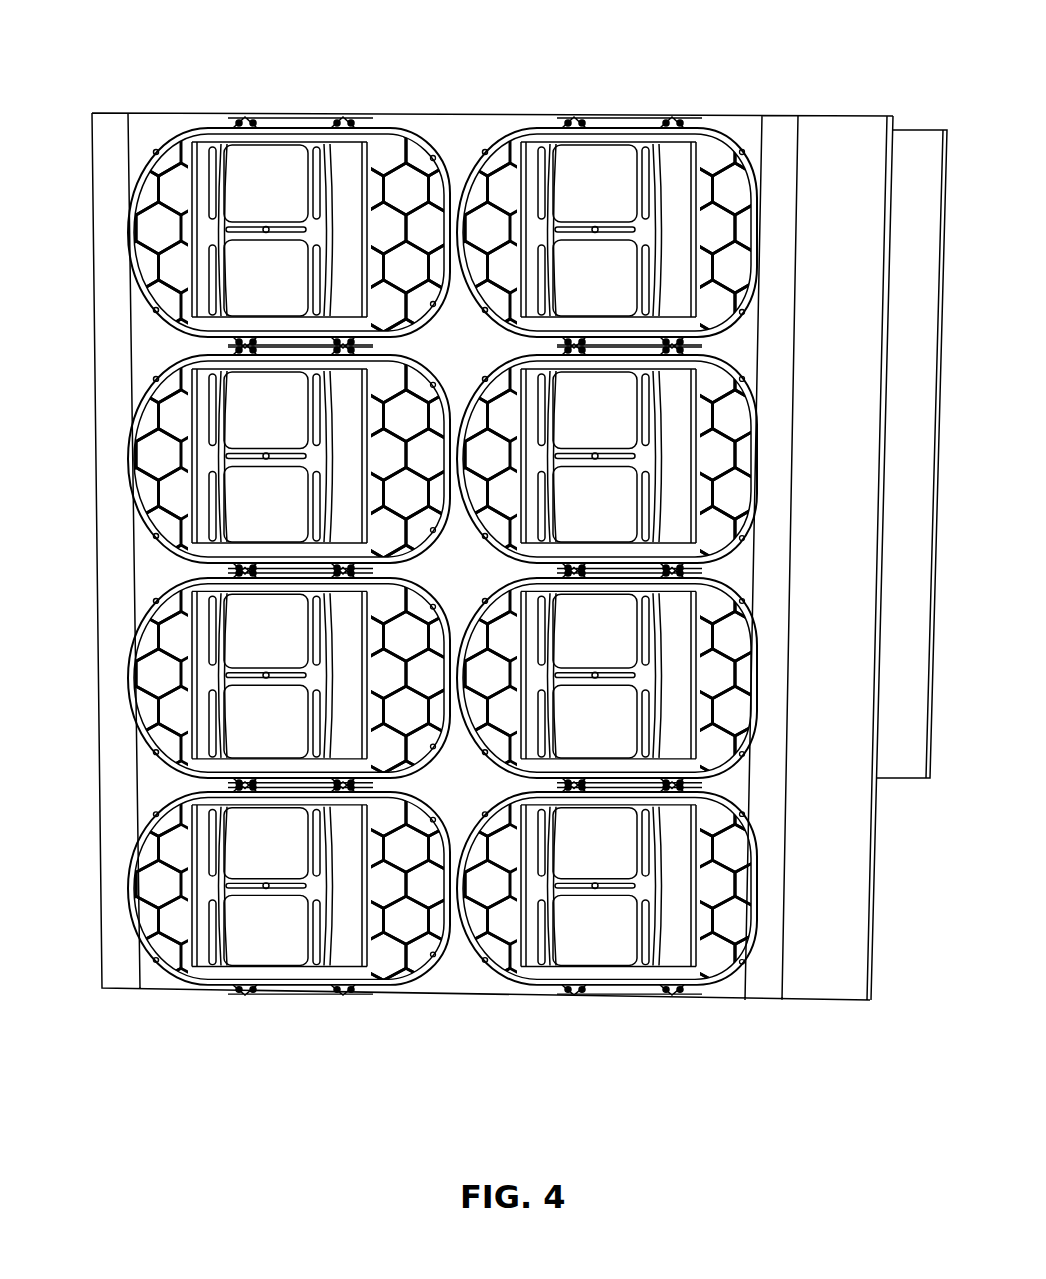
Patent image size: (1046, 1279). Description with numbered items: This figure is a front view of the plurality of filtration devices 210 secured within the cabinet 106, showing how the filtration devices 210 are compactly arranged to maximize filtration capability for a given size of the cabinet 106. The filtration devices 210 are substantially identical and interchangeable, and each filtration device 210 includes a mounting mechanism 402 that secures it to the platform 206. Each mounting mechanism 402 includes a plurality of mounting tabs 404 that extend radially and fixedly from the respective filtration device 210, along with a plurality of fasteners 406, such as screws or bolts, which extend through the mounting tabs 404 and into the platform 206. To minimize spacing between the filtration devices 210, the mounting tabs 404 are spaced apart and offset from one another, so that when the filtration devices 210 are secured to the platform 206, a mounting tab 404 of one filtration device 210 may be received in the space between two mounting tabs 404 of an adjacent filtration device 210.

The cabinet 106 is at (845, 569).
The platform 206 is at (458, 1000).
The filtration device 210 is at (613, 862).
The mounting mechanism 402 is at (505, 77).
The mounting tab 404 is at (155, 145).
The fastener 406 is at (250, 122).